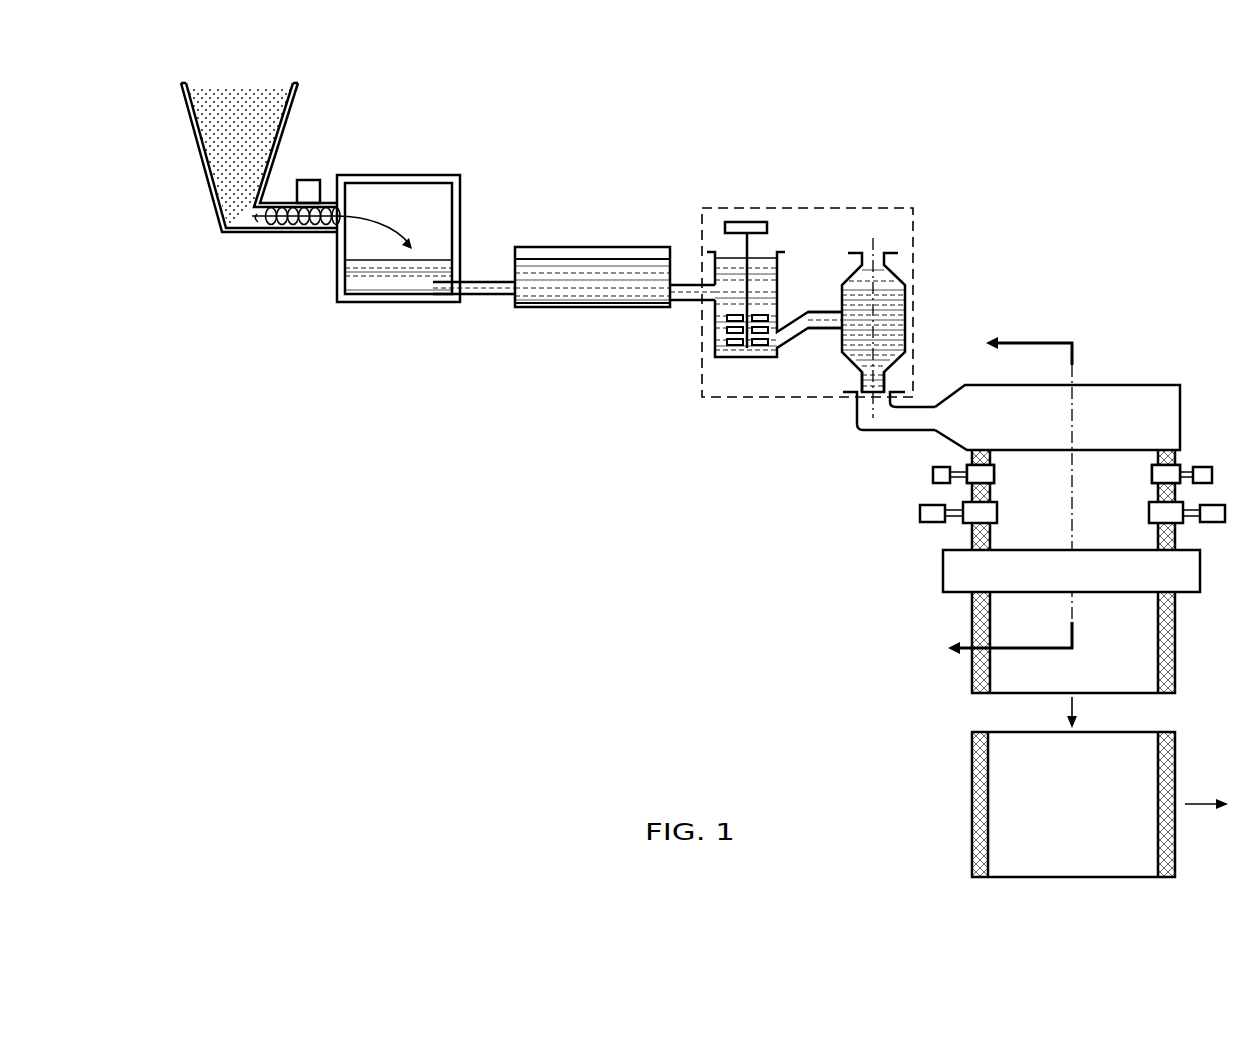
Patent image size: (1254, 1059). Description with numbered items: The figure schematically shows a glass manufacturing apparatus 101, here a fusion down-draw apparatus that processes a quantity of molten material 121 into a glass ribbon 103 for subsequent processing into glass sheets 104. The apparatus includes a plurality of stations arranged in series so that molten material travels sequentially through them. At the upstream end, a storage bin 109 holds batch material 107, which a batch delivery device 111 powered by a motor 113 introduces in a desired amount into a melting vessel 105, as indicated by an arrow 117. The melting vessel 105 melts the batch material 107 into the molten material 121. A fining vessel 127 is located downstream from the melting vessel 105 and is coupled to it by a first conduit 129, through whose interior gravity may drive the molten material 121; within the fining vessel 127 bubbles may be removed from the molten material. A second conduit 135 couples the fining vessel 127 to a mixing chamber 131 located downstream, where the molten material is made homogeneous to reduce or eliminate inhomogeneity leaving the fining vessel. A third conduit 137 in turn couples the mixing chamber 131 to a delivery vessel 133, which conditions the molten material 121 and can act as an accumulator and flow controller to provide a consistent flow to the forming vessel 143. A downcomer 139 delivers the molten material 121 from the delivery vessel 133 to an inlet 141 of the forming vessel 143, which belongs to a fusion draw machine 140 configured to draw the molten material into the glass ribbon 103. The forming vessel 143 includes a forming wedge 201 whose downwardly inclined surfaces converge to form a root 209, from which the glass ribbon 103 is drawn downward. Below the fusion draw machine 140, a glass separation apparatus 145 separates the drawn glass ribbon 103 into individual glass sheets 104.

The glass manufacturing apparatus 101 is at (894, 174).
The glass ribbon 103 is at (1047, 458).
The glass sheets 104 is at (1012, 827).
The melting vessel 105 is at (378, 325).
The batch material 107 is at (233, 90).
The storage bin 109 is at (203, 159).
The batch delivery device 111 is at (288, 222).
The motor 113 is at (315, 180).
The arrow 117 is at (365, 220).
The molten material 121 is at (432, 260).
The fining vessel 127 is at (587, 247).
The first conduit 129 is at (490, 280).
The mixing chamber 131 is at (778, 268).
The delivery vessel 133 is at (907, 298).
The second conduit 135 is at (692, 302).
The third conduit 137 is at (797, 318).
The downcomer 139 is at (885, 382).
The fusion draw machine 140 is at (1197, 356).
The inlet 141 is at (855, 415).
The forming vessel 143 is at (1110, 385).
The glass separation apparatus 145 is at (1182, 578).
The forming wedge 201 is at (1163, 428).
The root 209 is at (1088, 450).